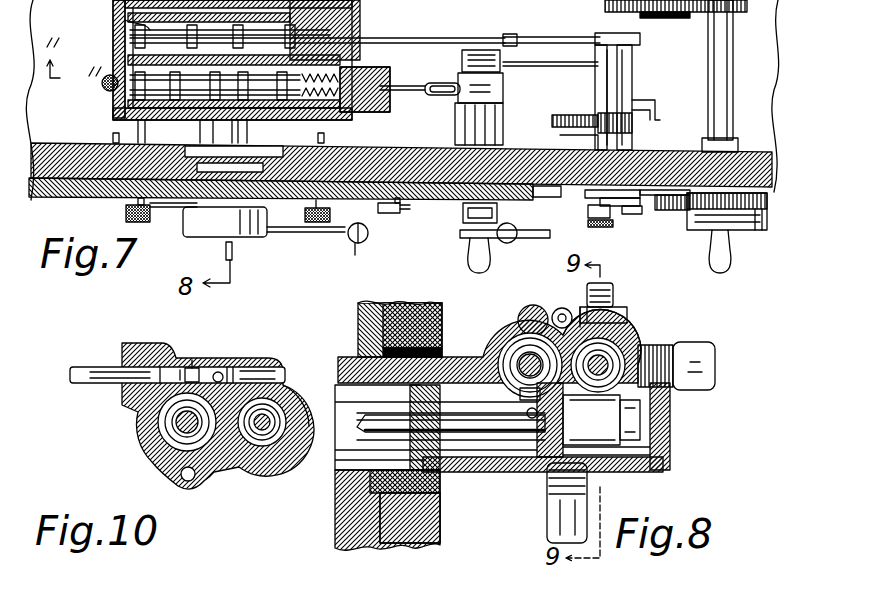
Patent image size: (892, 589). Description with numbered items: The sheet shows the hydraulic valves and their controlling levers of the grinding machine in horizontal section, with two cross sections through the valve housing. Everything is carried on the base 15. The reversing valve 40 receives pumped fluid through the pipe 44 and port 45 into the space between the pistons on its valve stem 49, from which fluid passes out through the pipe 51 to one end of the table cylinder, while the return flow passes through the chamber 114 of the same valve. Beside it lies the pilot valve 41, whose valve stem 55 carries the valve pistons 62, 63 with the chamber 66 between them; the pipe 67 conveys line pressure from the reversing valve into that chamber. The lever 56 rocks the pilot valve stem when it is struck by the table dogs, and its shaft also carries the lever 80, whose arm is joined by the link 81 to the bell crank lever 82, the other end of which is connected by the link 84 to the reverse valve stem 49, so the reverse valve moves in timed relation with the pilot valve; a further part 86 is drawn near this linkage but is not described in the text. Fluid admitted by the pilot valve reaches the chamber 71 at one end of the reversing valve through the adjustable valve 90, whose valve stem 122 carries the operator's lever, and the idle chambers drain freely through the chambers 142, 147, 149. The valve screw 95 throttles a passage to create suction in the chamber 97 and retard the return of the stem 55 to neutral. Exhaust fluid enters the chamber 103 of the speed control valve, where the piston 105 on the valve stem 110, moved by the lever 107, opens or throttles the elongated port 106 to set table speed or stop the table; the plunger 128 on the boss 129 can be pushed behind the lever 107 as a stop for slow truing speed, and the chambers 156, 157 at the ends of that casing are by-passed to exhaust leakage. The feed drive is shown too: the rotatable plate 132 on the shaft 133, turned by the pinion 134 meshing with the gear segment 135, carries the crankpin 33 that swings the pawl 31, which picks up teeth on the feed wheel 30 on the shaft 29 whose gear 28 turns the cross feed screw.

In FIG. 7, the base 15 is at (60, 180).
In FIG. 8, the base 15 is at (430, 535).
In FIG. 7, the gear 28 is at (705, 12).
In FIG. 7, the shaft 29 is at (715, 85).
In FIG. 7, the feed wheel 30 is at (759, 234).
In FIG. 7, the pawl 31 is at (680, 210).
In FIG. 7, the crankpin 33 is at (600, 227).
In FIG. 10, the reversing valve 40 is at (287, 456).
In FIG. 8, the reversing valve 40 is at (622, 335).
In FIG. 7, the pilot valve 41 is at (117, 112).
In FIG. 10, the pilot valve 41 is at (147, 440).
In FIG. 8, the pilot valve 41 is at (505, 343).
In FIG. 8, the pipe 44 is at (698, 352).
In FIG. 8, the port 45 is at (668, 380).
In FIG. 7, the valve stem 49 is at (382, 40).
In FIG. 10, the valve stem 49 is at (263, 432).
In FIG. 8, the valve stem 49 is at (602, 370).
In FIG. 8, the pipe 51 is at (612, 292).
In FIG. 7, the valve stem 55 is at (408, 88).
In FIG. 10, the valve stem 55 is at (195, 432).
In FIG. 8, the valve stem 55 is at (527, 360).
In FIG. 7, the lever 56 is at (465, 215).
In FIG. 7, the valve piston 62 is at (194, 132).
In FIG. 7, the valve piston 63 is at (305, 118).
In FIG. 7, the chamber 66 is at (262, 118).
In FIG. 8, the pipe 67 is at (560, 310).
In FIG. 7, the chamber 71 is at (128, 52).
In FIG. 7, the lever 80 is at (507, 243).
In FIG. 7, the link 81 is at (535, 68).
In FIG. 7, the bell crank lever 82 is at (598, 40).
In FIG. 7, the link 84 is at (530, 34).
In FIG. 7, the bar 86 is at (548, 226).
In FIG. 10, the valve 90 is at (200, 366).
In FIG. 7, the valve screw 95 is at (102, 83).
In FIG. 7, the chamber 97 is at (130, 88).
In FIG. 8, the chamber 103 is at (645, 470).
In FIG. 8, the piston 105 is at (545, 440).
In FIG. 8, the port 106 is at (604, 474).
In FIG. 7, the lever 107 is at (251, 239).
In FIG. 8, the valve stem 110 is at (456, 432).
In FIG. 7, the chamber 114 is at (122, 30).
In FIG. 10, the valve stem 122 is at (95, 374).
In FIG. 7, the plunger 128 is at (404, 212).
In FIG. 7, the boss 129 is at (385, 213).
In FIG. 7, the rotatable plate 132 is at (635, 214).
In FIG. 7, the shaft 133 is at (583, 148).
In FIG. 7, the pinion 134 is at (632, 128).
In FIG. 7, the gear segment 135 is at (552, 120).
In FIG. 7, the chamber 142 is at (328, 118).
In FIG. 7, the chamber 147 is at (125, 122).
In FIG. 7, the chamber 149 is at (157, 129).
In FIG. 8, the chamber 156 is at (640, 432).
In FIG. 8, the chamber 157 is at (481, 442).